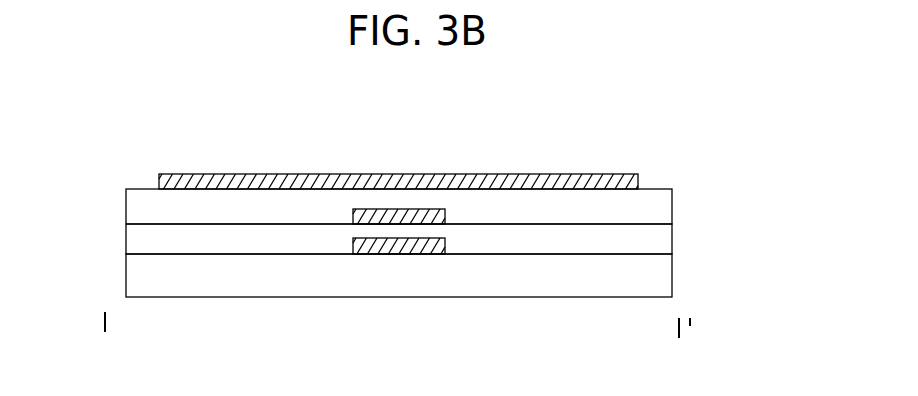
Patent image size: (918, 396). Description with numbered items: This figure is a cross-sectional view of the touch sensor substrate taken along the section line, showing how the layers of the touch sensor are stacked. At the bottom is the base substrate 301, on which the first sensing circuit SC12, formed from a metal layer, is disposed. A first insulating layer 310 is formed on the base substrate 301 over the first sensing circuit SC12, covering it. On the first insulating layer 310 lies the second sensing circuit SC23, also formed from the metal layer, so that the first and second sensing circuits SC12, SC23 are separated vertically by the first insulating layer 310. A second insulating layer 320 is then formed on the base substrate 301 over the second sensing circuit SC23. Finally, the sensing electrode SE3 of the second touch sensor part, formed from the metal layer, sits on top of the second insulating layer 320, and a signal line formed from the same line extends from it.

The second insulating layer 320 is at (672, 210).
The first insulating layer 310 is at (672, 241).
The base substrate 301 is at (672, 276).
The sensing electrode SE3 is at (530, 174).
The second sensing circuit SC23 is at (353, 220).
The first sensing circuit SC12 is at (397, 250).